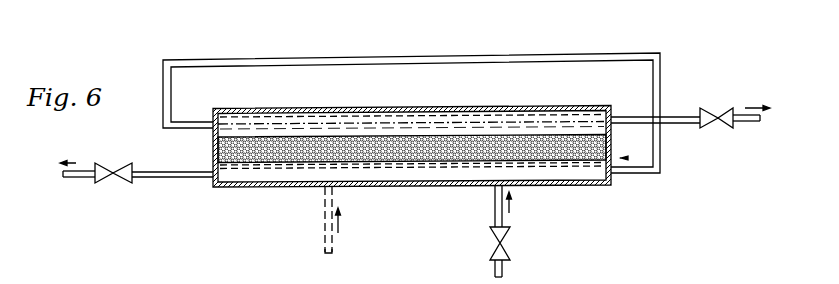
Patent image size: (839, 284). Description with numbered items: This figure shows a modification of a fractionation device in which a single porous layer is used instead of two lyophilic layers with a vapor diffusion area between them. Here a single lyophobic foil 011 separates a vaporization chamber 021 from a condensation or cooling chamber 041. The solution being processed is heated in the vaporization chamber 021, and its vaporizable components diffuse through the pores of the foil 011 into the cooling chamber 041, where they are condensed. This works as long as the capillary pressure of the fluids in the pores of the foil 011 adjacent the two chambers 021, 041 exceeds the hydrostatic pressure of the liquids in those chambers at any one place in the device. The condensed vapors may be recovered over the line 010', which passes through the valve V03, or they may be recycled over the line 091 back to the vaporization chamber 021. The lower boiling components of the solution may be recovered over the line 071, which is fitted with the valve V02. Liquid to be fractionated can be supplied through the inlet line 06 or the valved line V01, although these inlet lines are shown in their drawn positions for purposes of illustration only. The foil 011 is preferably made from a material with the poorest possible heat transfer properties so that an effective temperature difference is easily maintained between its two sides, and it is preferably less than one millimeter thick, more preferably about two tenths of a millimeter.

The lyophobic foil 011 is at (217, 150).
The vaporization chamber 021 is at (272, 176).
The condensation or cooling chamber 041 is at (463, 120).
The inlet line 06 is at (323, 220).
The line 071 is at (177, 178).
The line 091 is at (583, 60).
The line 010' is at (673, 98).
The valved line V01 is at (507, 235).
The valve V02 is at (102, 183).
The valve V03 is at (708, 127).